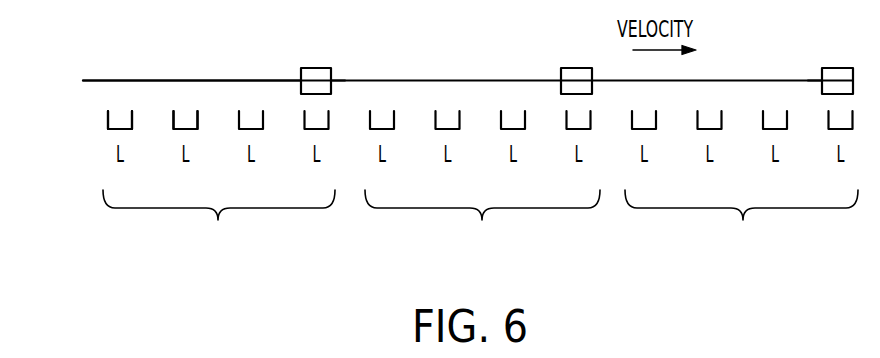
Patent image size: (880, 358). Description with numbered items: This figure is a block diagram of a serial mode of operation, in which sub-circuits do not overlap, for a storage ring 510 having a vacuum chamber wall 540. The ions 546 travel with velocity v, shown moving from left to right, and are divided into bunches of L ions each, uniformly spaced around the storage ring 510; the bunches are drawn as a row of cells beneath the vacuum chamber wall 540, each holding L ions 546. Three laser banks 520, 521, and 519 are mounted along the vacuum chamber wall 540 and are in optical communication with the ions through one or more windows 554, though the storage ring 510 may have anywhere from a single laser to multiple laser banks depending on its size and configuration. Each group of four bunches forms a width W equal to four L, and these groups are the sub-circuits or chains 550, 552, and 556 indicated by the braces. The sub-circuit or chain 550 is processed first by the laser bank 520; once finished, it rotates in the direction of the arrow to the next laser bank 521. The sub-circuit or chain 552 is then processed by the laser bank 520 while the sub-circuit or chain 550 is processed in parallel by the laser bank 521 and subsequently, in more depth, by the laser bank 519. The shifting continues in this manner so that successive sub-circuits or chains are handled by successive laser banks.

The storage ring 510 is at (88, 96).
The vacuum chamber wall 540 is at (175, 80).
The laser bank 520 is at (308, 68).
The laser bank 521 is at (577, 68).
The laser bank 519 is at (835, 68).
The window 554 is at (332, 80).
The ions 546 is at (163, 124).
The sub-circuit or chain 552 is at (248, 167).
The second window 556 is at (510, 168).
The sub-circuit or chain 550 is at (771, 168).